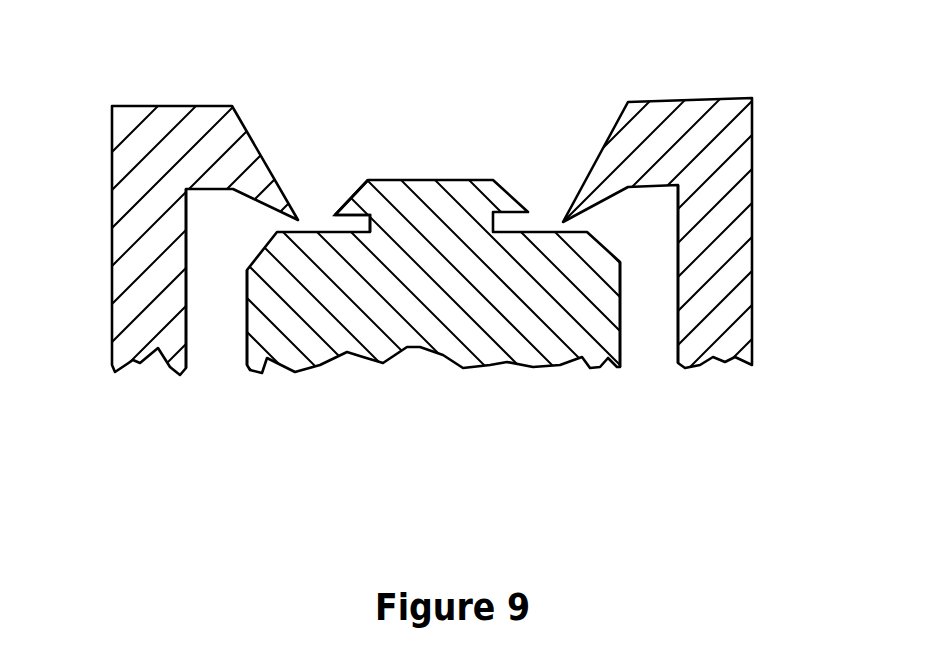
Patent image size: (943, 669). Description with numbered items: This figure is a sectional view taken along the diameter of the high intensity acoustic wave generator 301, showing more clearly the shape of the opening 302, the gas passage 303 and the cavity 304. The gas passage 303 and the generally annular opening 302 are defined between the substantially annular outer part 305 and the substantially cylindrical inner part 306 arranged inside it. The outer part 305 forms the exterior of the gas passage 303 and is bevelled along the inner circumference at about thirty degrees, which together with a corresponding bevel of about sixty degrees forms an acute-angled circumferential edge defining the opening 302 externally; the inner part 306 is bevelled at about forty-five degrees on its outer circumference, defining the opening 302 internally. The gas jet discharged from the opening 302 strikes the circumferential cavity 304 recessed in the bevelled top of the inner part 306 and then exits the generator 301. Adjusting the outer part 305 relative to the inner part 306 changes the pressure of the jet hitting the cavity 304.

The high intensity acoustic wave generator 301 is at (595, 378).
The opening 302 is at (285, 224).
The gas passage 303 is at (220, 348).
The cavity 304 is at (358, 222).
The outer part 305 is at (735, 242).
The inner part 306 is at (445, 205).